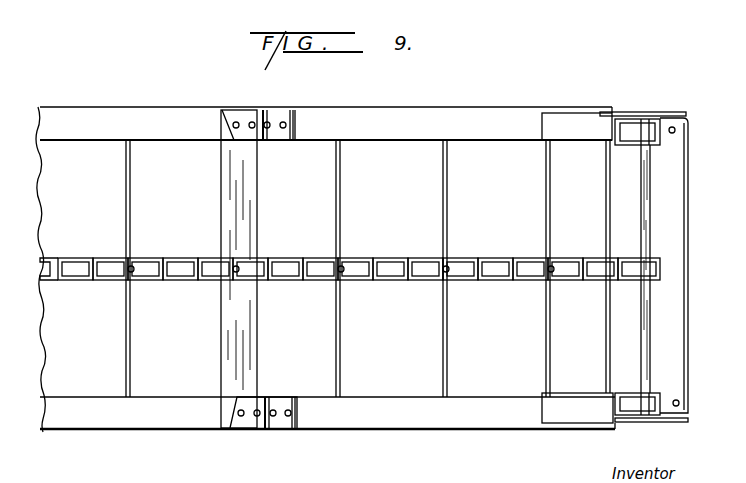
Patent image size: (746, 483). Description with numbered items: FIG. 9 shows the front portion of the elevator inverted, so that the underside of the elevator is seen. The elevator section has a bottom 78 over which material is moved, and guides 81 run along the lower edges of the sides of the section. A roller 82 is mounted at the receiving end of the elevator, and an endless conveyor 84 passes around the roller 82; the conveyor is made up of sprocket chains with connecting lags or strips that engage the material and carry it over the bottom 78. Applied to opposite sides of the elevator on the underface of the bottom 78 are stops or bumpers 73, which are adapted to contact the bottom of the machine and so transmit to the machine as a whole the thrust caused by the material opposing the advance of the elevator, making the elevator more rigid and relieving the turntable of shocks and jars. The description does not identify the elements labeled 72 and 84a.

The guides 81 is at (147, 118).
The cross bar 72 is at (220, 328).
The stops 73 is at (240, 110).
The cross bars / stanchions 84a is at (130, 208).
The endless conveyor 84 is at (491, 255).
The bottom 78 is at (395, 231).
The roller 82 is at (612, 203).